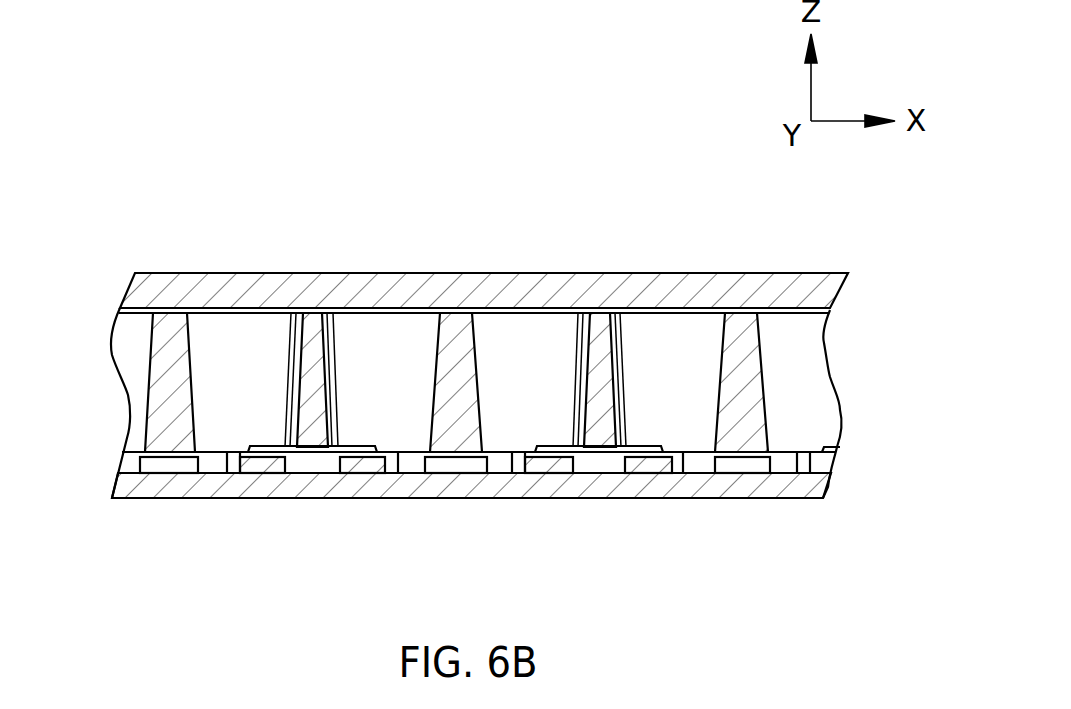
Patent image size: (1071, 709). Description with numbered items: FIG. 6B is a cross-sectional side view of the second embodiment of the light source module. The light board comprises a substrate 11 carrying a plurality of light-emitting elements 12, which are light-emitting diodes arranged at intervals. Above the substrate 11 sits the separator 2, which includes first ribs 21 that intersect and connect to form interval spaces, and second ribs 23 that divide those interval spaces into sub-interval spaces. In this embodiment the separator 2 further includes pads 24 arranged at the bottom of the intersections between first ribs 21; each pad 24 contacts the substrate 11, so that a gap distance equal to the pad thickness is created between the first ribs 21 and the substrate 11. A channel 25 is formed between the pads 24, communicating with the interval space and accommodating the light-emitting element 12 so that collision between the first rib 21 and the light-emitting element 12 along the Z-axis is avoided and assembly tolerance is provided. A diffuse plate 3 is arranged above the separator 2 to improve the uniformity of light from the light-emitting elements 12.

The separator 2 is at (132, 393).
The diffuse plate 3 is at (818, 300).
The substrate 11 is at (112, 485).
The light-emitting element 12 is at (173, 463).
The first rib 21 is at (312, 328).
The second rib 23 is at (165, 328).
The pad 24 is at (307, 465).
The channel 25 is at (499, 488).